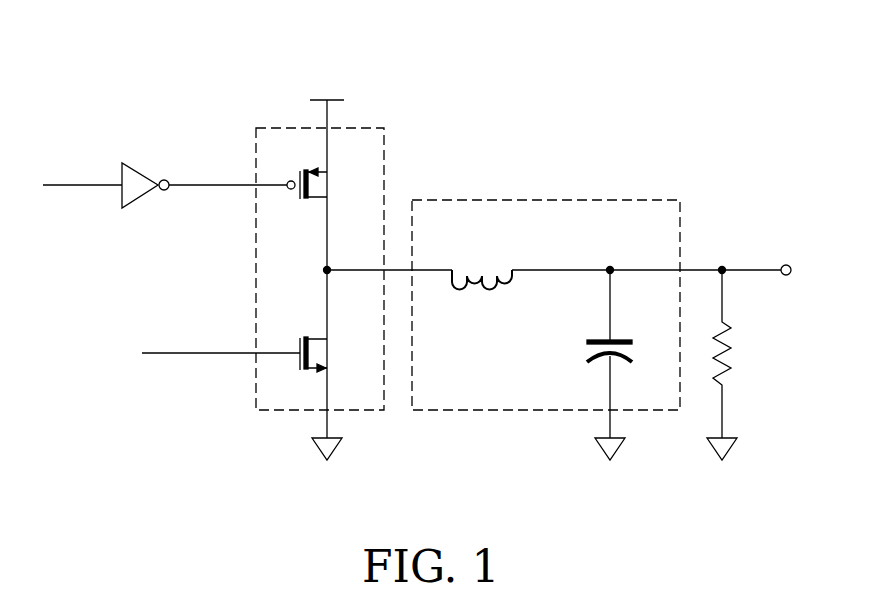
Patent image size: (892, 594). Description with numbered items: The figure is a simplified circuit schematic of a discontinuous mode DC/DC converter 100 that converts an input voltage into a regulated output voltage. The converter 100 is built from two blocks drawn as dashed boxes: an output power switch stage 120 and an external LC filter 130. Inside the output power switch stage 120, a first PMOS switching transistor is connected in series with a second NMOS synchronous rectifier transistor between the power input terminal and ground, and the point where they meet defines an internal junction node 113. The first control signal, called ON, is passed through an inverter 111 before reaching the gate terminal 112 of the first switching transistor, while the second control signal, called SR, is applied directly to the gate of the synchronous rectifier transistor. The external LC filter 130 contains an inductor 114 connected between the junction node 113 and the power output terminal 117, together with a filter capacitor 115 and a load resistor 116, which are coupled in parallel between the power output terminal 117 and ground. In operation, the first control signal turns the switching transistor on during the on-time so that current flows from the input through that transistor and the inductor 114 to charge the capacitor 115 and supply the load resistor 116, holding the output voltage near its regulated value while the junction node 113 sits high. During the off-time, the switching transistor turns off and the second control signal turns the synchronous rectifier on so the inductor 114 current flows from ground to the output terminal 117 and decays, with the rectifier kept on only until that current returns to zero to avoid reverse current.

The DC/DC converter 100 is at (714, 53).
The inverter 111 is at (137, 170).
The gate terminal 112 is at (209, 184).
The internal junction node 113 is at (324, 269).
The inductor 114 is at (480, 294).
The filter capacitor 115 is at (597, 340).
The load resistor 116 is at (727, 324).
The power output terminal 117 is at (748, 268).
The output power switch stage 120 is at (384, 148).
The external LC filter 130 is at (620, 200).